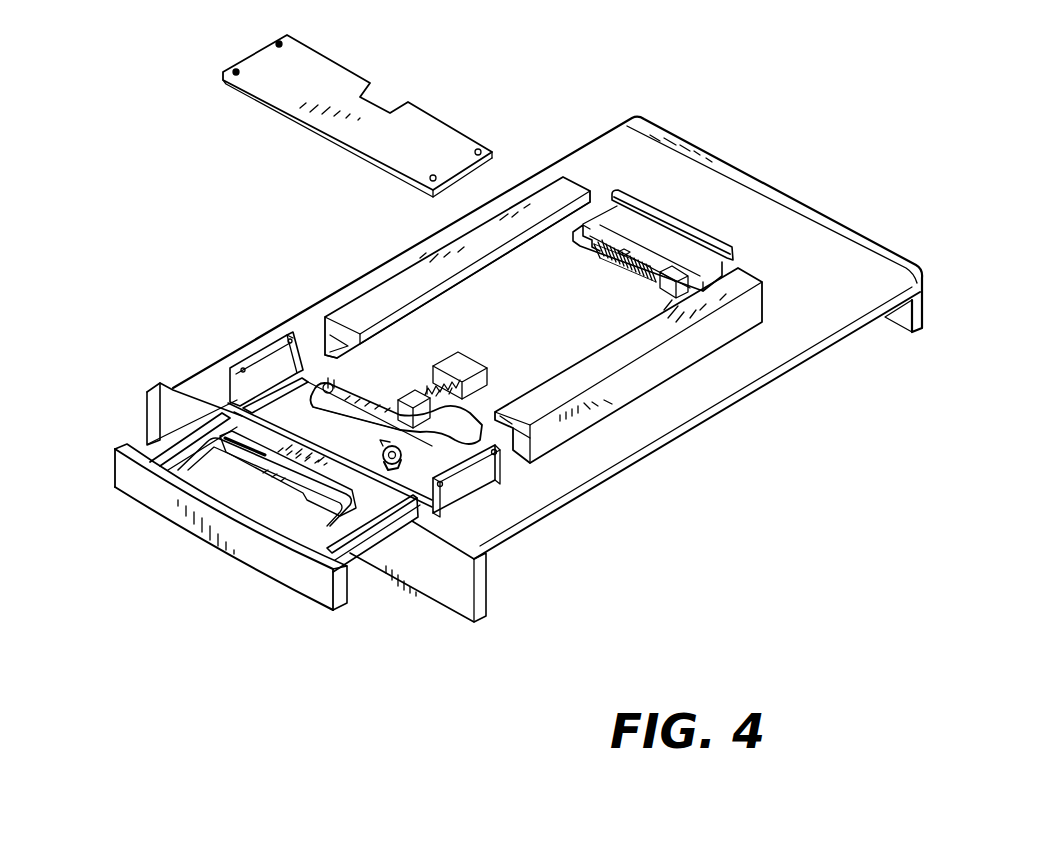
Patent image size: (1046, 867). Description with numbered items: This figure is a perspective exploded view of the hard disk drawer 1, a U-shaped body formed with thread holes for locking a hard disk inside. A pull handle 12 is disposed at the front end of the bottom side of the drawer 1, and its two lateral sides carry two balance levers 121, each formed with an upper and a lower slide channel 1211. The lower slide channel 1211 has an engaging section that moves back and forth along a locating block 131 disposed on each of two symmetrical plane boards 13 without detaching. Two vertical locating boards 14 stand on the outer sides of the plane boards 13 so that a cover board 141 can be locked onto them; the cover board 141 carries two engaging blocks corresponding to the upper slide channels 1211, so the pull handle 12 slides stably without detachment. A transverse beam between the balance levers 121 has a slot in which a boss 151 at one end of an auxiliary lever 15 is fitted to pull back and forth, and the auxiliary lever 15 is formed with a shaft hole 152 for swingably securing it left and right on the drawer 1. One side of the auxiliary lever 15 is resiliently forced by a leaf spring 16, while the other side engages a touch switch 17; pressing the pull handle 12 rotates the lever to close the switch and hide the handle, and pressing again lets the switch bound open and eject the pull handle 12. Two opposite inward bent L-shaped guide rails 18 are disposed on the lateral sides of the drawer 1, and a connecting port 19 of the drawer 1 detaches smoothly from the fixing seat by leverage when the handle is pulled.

The drawer 1 is at (697, 427).
The pull handle 12 is at (267, 559).
The balance lever 121 is at (375, 543).
The slide channel 1211 is at (140, 435).
The plane board 13 is at (300, 380).
The locating block 131 is at (245, 392).
The vertical locating board 14 is at (462, 495).
The cover board 141 is at (335, 78).
The auxiliary lever 15 is at (476, 435).
The boss 151 is at (323, 387).
The shaft hole 152 is at (447, 368).
The leaf spring 16 is at (375, 444).
The touch switch 17 is at (483, 363).
The L-shaped guide rail 18 is at (412, 285).
The connecting port 19 is at (687, 228).